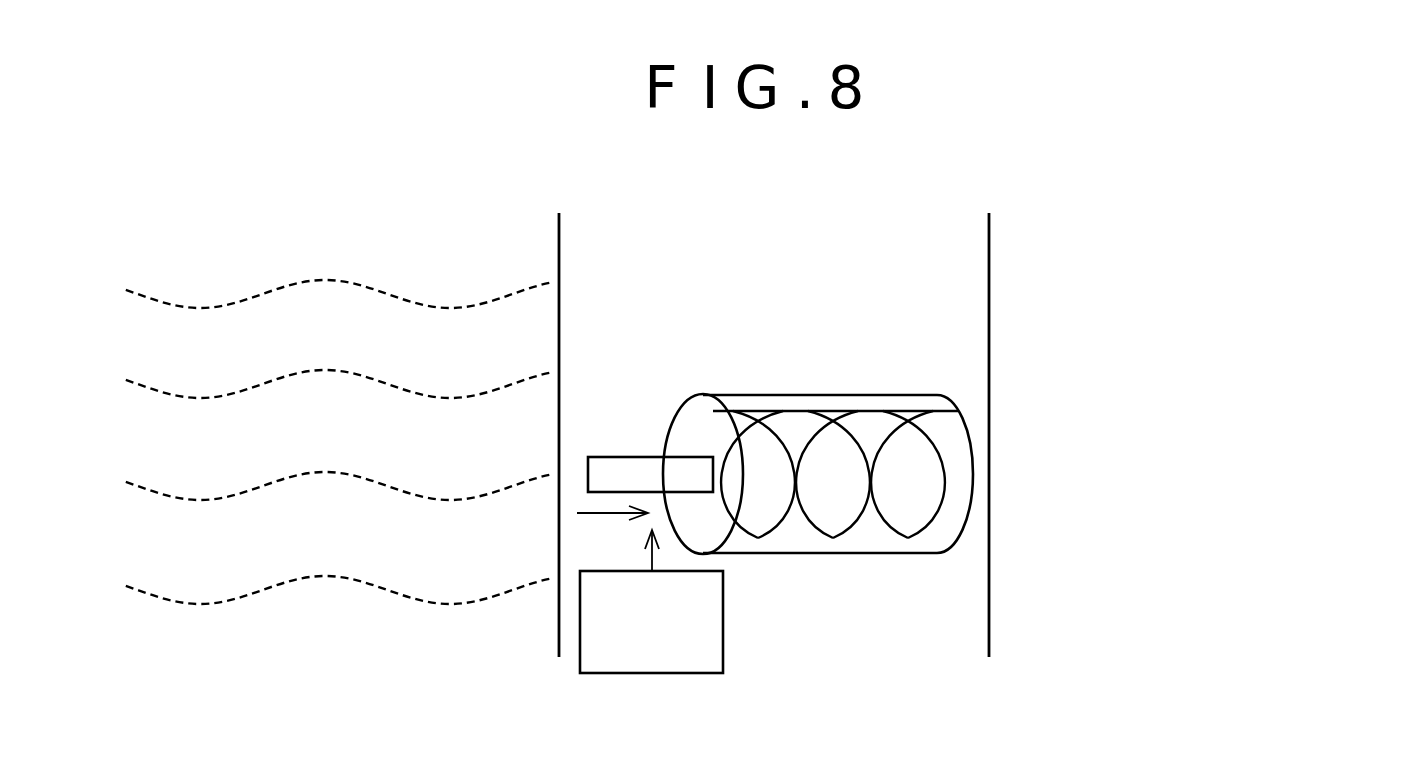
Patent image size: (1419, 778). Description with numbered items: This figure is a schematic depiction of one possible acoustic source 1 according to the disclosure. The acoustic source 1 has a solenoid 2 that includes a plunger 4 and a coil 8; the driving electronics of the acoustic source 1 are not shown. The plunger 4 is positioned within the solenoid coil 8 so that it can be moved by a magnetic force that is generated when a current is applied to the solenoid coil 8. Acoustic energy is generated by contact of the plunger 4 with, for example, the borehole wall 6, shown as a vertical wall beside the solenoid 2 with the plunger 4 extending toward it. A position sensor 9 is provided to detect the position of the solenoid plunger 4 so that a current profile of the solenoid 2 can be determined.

The acoustic source 1 is at (648, 306).
The solenoid 2 is at (827, 555).
The plunger 4 is at (618, 457).
The borehole wall 6 is at (559, 226).
The coil 8 is at (870, 411).
The position sensor 9 is at (650, 674).